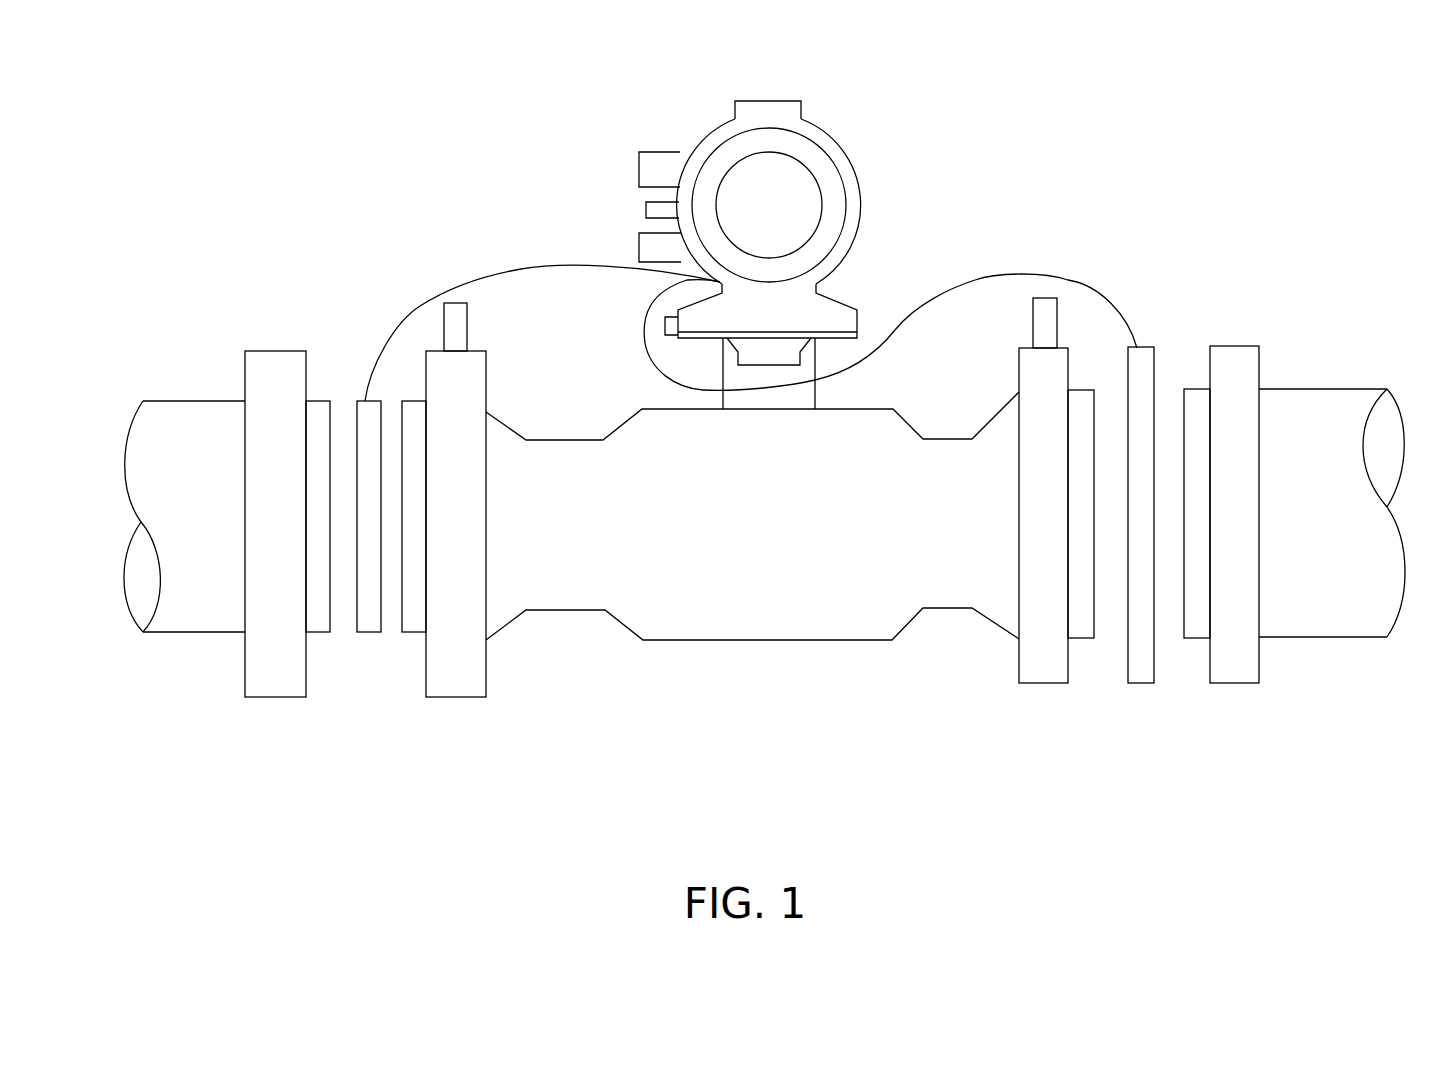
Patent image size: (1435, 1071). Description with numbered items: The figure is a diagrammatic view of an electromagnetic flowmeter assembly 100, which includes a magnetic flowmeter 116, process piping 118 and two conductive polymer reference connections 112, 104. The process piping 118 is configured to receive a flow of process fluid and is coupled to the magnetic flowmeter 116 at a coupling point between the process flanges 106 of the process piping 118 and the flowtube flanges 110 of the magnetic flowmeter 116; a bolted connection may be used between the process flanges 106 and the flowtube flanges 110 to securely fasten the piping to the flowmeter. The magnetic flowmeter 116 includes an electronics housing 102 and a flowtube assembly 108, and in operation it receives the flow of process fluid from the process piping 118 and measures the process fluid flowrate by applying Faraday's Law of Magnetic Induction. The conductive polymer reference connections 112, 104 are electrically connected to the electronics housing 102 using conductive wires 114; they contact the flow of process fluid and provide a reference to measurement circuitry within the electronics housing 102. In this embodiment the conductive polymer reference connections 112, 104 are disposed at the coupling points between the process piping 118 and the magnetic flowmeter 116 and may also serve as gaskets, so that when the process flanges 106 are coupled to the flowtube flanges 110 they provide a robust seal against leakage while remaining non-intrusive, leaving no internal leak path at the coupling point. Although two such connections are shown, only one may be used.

The electromagnetic flowmeter assembly 100 is at (1038, 145).
The electronics housing 102 is at (697, 145).
The conductive polymer reference connection 104 is at (1157, 363).
The process flanges 106 is at (275, 351).
The flowtube assembly 108 is at (786, 640).
The flowtube flanges 110 is at (457, 698).
The conductive polymer reference connection 112 is at (355, 429).
The conductive wires 114 is at (965, 287).
The magnetic flowmeter 116 is at (772, 88).
The process piping 118 is at (142, 648).